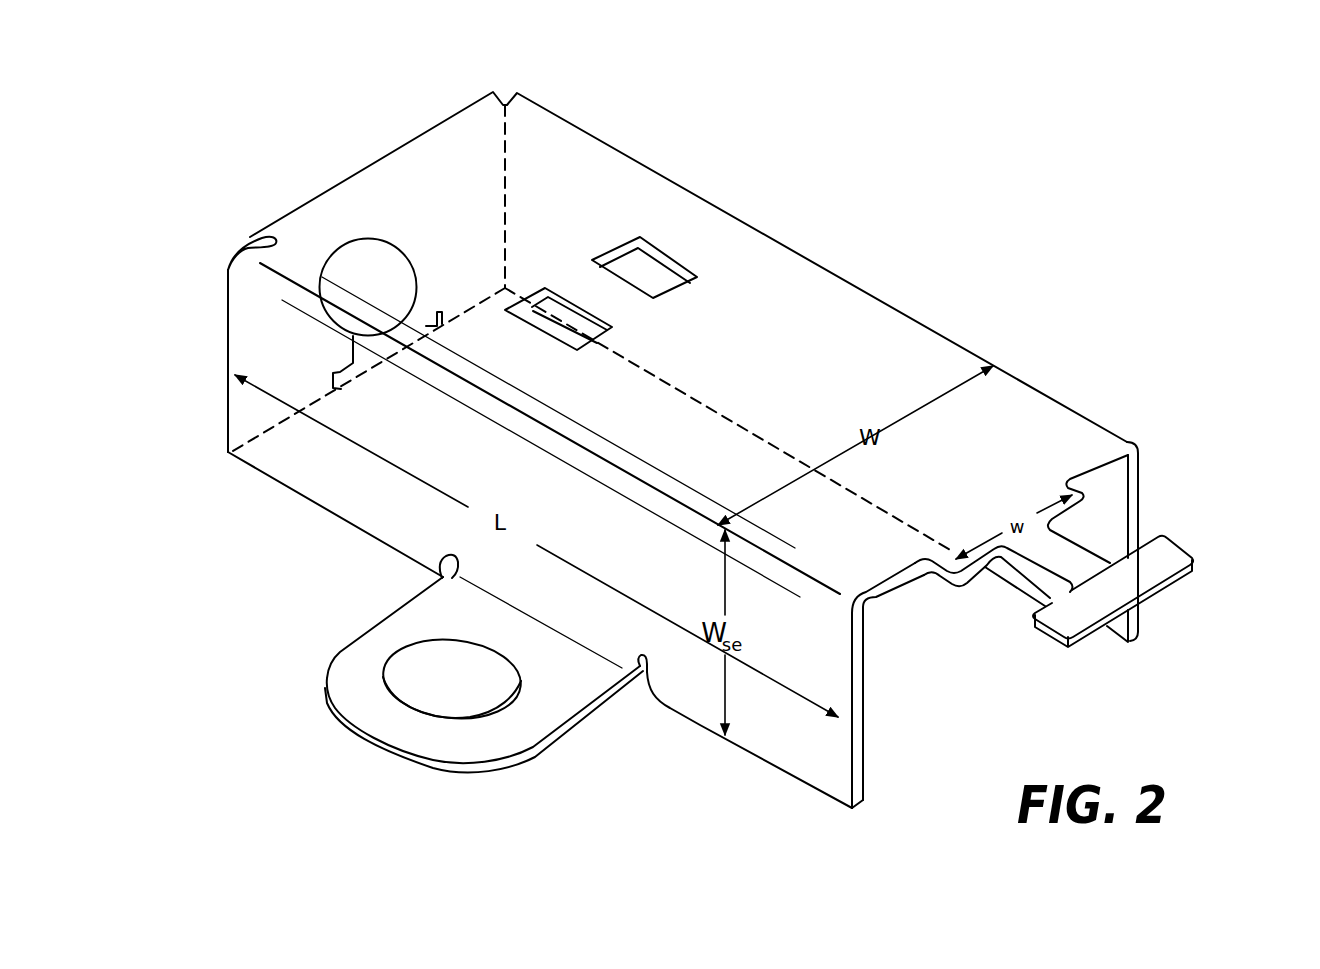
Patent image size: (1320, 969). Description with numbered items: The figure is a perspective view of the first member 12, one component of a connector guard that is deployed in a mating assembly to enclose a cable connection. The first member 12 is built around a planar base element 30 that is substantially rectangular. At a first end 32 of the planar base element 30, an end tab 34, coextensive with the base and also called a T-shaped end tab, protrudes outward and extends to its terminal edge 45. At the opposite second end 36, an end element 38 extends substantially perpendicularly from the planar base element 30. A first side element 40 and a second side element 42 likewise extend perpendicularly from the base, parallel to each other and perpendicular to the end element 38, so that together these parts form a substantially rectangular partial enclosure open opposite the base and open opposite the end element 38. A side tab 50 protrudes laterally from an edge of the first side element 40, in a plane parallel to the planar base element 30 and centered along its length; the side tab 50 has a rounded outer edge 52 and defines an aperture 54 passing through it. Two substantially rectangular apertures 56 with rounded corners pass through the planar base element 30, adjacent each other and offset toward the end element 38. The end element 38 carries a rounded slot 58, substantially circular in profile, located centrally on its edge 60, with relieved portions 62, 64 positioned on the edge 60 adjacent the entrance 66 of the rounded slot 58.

The first member 12 is at (1106, 354).
The planar base element 30 is at (630, 420).
The first end 32 is at (914, 612).
The end tab 34 is at (1203, 540).
The second end 36 is at (241, 139).
The end element 38 is at (452, 133).
The first side element 40 is at (360, 515).
The second side element 42 is at (843, 308).
The terminal edge 45 is at (1090, 630).
The side tab 50 is at (515, 728).
The outer edge 52 is at (340, 722).
The aperture 54 is at (430, 697).
The apertures 56 is at (613, 330).
The rounded slot 58 is at (345, 240).
The edge 60 is at (238, 455).
The relieved portion 62 is at (340, 370).
The relieved portion 64 is at (428, 313).
The entrance 66 is at (387, 378).